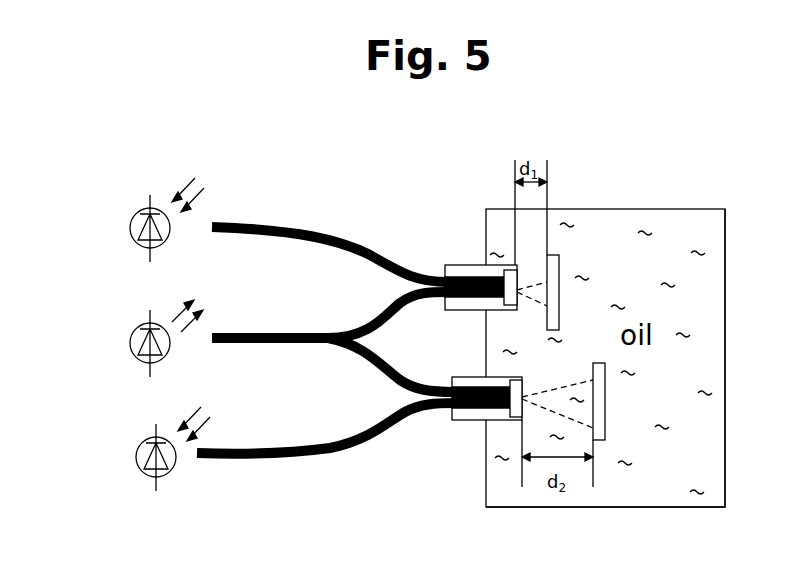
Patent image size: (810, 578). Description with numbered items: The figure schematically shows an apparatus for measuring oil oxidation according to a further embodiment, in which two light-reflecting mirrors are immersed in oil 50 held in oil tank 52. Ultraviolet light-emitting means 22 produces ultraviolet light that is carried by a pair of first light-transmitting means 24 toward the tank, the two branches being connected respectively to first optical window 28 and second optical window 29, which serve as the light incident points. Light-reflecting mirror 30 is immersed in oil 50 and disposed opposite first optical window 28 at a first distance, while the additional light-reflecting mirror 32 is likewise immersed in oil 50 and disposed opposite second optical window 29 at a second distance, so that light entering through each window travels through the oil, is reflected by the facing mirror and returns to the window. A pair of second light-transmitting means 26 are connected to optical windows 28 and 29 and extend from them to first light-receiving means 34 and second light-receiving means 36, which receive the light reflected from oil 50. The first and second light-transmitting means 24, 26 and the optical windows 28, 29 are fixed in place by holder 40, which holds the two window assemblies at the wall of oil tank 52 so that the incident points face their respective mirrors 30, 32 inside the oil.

The ultraviolet light-emitting means 22 is at (128, 351).
The first light-transmitting means 24 is at (358, 347).
The second light-transmitting means 26 is at (300, 228).
The first optical window 28 is at (512, 272).
The second optical window 29 is at (514, 416).
The light-reflecting mirror 30 is at (556, 262).
The light-reflecting mirror 32 is at (598, 445).
The first light-receiving means 34 is at (128, 236).
The second light-receiving means 36 is at (135, 465).
The holder 40 is at (468, 382).
The oil 50 is at (708, 352).
The oil tank 52 is at (726, 467).